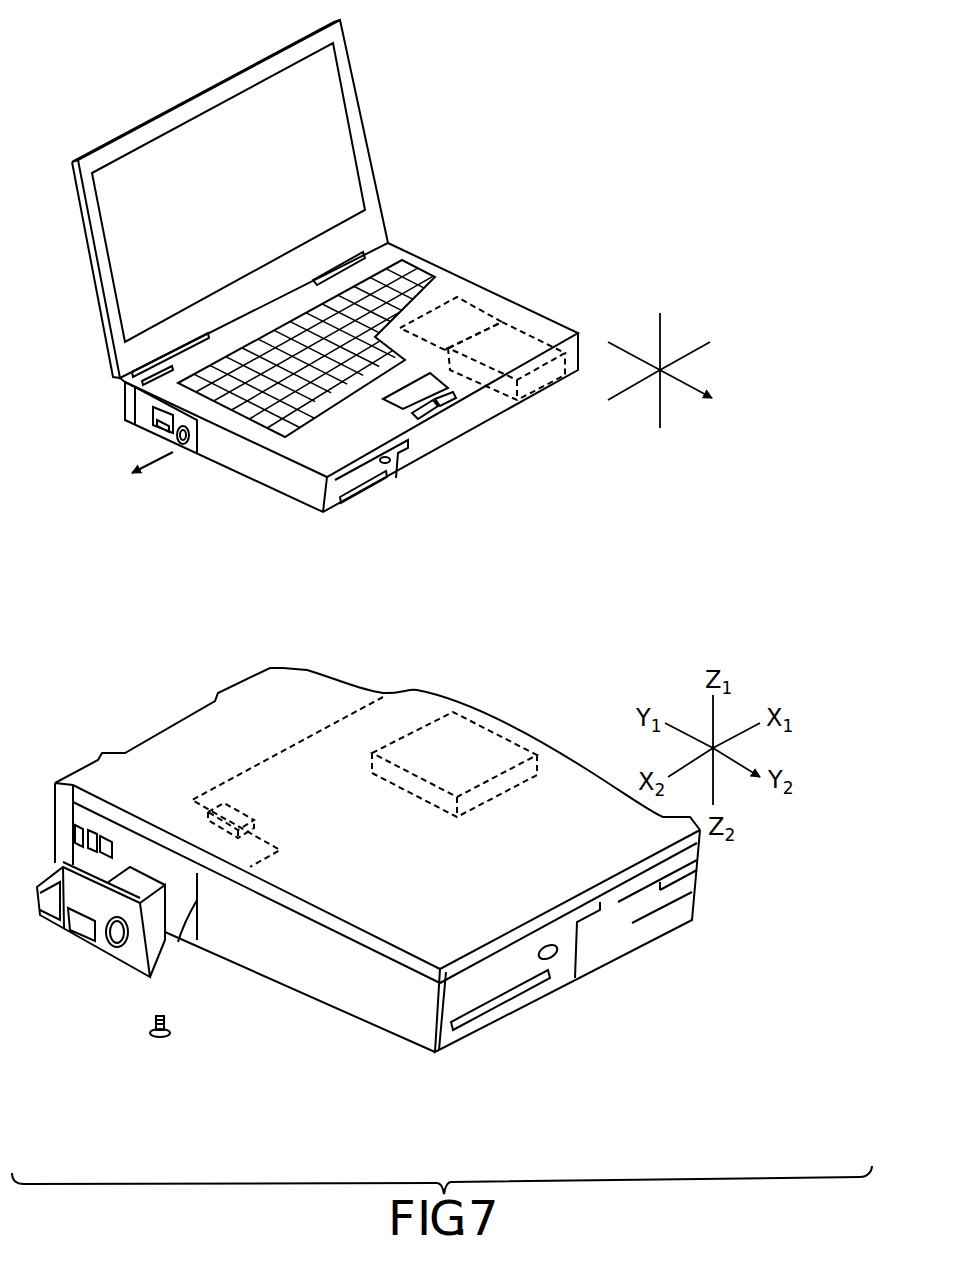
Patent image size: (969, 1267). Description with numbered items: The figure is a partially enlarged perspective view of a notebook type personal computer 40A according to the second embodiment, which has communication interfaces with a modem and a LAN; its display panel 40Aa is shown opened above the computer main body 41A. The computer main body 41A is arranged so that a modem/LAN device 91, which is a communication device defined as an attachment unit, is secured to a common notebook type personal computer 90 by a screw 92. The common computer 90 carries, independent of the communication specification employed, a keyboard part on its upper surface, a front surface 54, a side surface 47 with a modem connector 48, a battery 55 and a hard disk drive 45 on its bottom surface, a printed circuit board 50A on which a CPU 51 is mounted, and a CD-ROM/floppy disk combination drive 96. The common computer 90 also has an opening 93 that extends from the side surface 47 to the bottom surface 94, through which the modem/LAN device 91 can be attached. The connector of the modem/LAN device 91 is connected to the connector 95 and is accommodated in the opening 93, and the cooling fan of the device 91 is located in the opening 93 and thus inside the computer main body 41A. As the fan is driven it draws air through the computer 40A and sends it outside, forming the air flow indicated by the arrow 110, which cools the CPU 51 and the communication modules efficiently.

The notebook type personal computer 40A is at (486, 44).
The display unit 40Aa is at (378, 150).
The computer main body 41A is at (434, 253).
The modem connector 48 is at (437, 288).
The battery 55 is at (460, 313).
The hard disk drive 45 is at (517, 343).
The common notebook type personal computer 90 is at (523, 283).
The front surface 54 is at (445, 438).
The CD-ROM/floppy disk combination drive 96 is at (357, 497).
The side surface 47 is at (233, 463).
The opening 93 is at (186, 452).
The bottom surface 94 is at (205, 468).
The arrow 110 is at (148, 464).
The printed circuit board 50A is at (302, 732).
The CPU 51 is at (448, 730).
The connector 95 is at (215, 793).
The modem/LAN device 91 is at (90, 955).
The screw 92 is at (146, 1032).